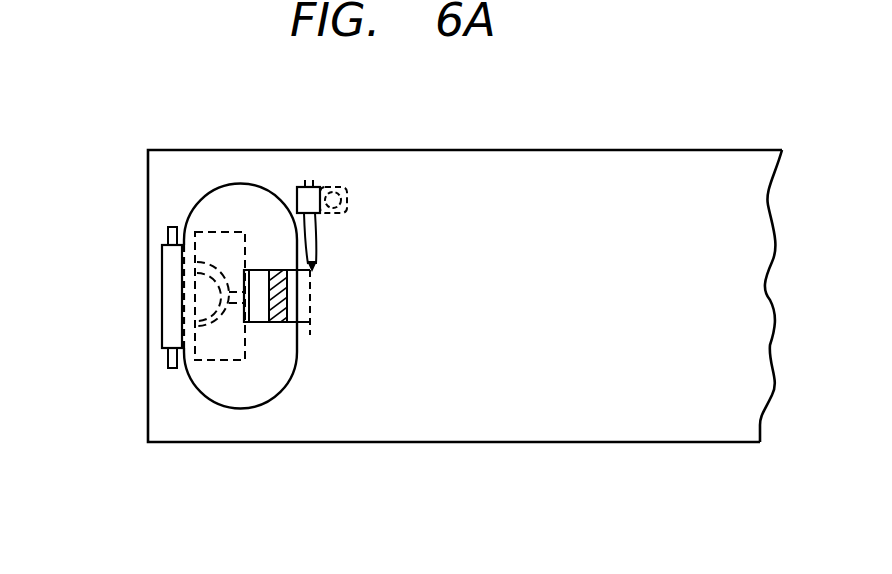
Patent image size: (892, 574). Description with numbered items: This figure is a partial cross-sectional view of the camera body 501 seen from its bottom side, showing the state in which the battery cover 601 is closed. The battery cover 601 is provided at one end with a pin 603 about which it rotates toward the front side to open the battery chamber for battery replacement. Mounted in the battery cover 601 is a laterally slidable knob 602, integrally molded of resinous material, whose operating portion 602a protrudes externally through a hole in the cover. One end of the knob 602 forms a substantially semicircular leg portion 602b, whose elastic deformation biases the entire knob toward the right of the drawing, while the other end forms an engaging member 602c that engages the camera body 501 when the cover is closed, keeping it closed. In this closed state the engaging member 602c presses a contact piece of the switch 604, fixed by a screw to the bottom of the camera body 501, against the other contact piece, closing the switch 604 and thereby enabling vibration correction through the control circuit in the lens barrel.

The camera body 501 is at (148, 202).
The battery cover 601 is at (260, 407).
The knob 602 is at (241, 286).
The operating portion 602a is at (268, 310).
The leg portion 602b is at (197, 283).
The engaging member 602c is at (312, 302).
The pin 603 is at (172, 368).
The switch 604 is at (327, 186).